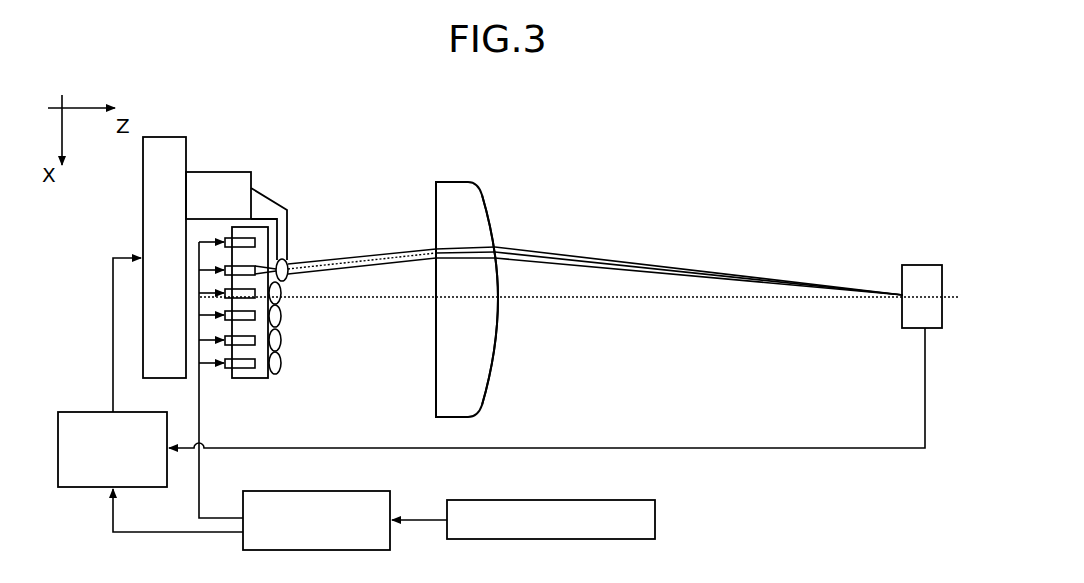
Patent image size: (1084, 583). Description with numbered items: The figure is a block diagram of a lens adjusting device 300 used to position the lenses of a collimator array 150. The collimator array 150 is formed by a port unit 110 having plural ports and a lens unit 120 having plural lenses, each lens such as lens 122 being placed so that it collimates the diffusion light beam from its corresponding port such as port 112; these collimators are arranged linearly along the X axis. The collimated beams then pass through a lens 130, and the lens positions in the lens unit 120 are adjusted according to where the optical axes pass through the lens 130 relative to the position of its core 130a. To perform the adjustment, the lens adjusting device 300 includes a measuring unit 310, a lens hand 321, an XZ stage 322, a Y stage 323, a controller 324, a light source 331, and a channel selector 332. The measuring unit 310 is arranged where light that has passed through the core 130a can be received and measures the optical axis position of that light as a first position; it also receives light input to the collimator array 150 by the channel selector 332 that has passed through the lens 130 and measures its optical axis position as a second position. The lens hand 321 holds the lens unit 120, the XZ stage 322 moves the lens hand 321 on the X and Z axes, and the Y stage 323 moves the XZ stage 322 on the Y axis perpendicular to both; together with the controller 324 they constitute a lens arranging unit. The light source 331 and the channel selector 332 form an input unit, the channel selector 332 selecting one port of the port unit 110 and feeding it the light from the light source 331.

The port unit 110 is at (241, 330).
The port 112 is at (284, 259).
The lens unit 120 is at (296, 327).
The lens 122 is at (290, 277).
The lens 130 is at (450, 182).
The core 130a is at (484, 301).
The collimator array 150 is at (267, 380).
The lens adjusting device 300 is at (718, 206).
The measuring unit 310 is at (914, 265).
The lens hand 321 is at (270, 199).
The XZ stage 322 is at (204, 172).
The Y stage 323 is at (165, 137).
The controller 324 is at (132, 412).
The light source 331 is at (500, 500).
The channel selector 332 is at (328, 491).